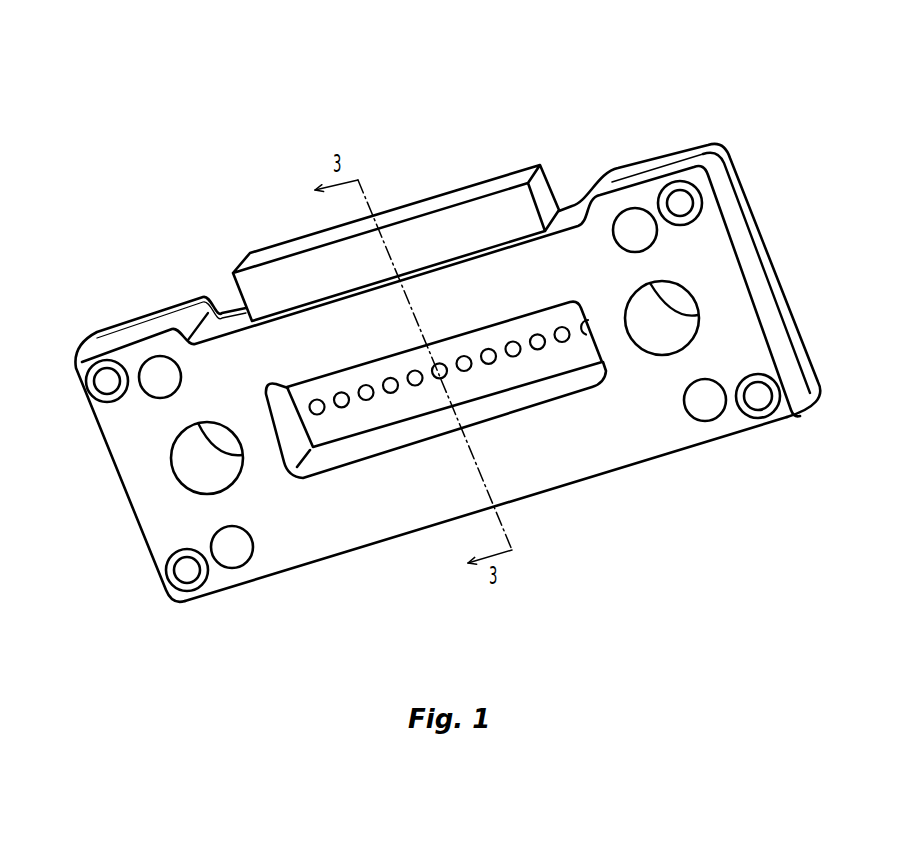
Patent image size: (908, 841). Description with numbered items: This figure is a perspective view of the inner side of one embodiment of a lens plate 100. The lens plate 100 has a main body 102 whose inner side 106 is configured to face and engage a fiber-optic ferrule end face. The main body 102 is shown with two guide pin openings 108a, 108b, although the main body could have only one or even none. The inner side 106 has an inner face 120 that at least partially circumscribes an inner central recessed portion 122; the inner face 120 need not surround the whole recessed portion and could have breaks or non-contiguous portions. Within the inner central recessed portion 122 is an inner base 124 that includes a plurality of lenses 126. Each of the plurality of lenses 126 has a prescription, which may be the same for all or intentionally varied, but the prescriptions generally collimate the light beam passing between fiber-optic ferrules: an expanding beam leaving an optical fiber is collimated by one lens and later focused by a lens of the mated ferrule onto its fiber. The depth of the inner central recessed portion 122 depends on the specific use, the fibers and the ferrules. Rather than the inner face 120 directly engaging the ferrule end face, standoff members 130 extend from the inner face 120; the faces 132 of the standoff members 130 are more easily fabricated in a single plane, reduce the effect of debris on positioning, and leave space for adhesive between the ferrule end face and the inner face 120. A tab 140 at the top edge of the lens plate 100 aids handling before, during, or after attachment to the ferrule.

The lens plate 100 is at (453, 327).
The main body 102 is at (800, 325).
The inner side 106 is at (628, 468).
The guide pin opening 108a is at (193, 491).
The guide pin opening 108b is at (695, 310).
The inner face 120 is at (360, 532).
The inner central recessed portion 122 is at (406, 415).
The inner base 124 is at (518, 388).
The plurality of lenses 126 is at (563, 332).
The standoff members 130 is at (101, 404).
The faces of the standoff members 132 is at (106, 383).
The tab 140 is at (455, 190).